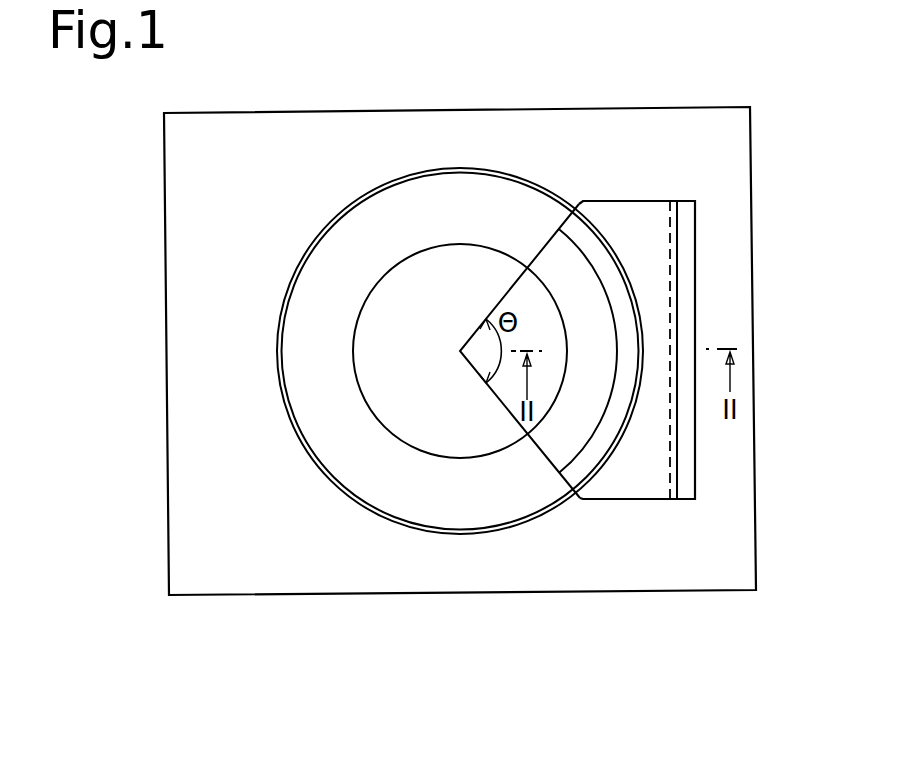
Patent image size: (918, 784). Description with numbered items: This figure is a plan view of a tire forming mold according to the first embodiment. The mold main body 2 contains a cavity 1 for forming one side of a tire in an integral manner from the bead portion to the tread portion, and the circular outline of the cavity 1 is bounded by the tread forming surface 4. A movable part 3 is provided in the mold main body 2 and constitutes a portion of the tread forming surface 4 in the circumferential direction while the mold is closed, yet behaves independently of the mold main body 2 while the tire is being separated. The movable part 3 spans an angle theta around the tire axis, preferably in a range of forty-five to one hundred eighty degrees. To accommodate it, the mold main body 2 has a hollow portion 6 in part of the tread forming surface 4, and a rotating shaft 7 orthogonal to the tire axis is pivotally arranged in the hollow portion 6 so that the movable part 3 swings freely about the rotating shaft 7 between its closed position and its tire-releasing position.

The cavity 1 is at (457, 207).
The mold main body 2 is at (324, 138).
The movable part 3 is at (628, 218).
The tread forming surface 4 is at (511, 181).
The hollow portion 6 is at (686, 252).
The rotating shaft 7 is at (672, 312).